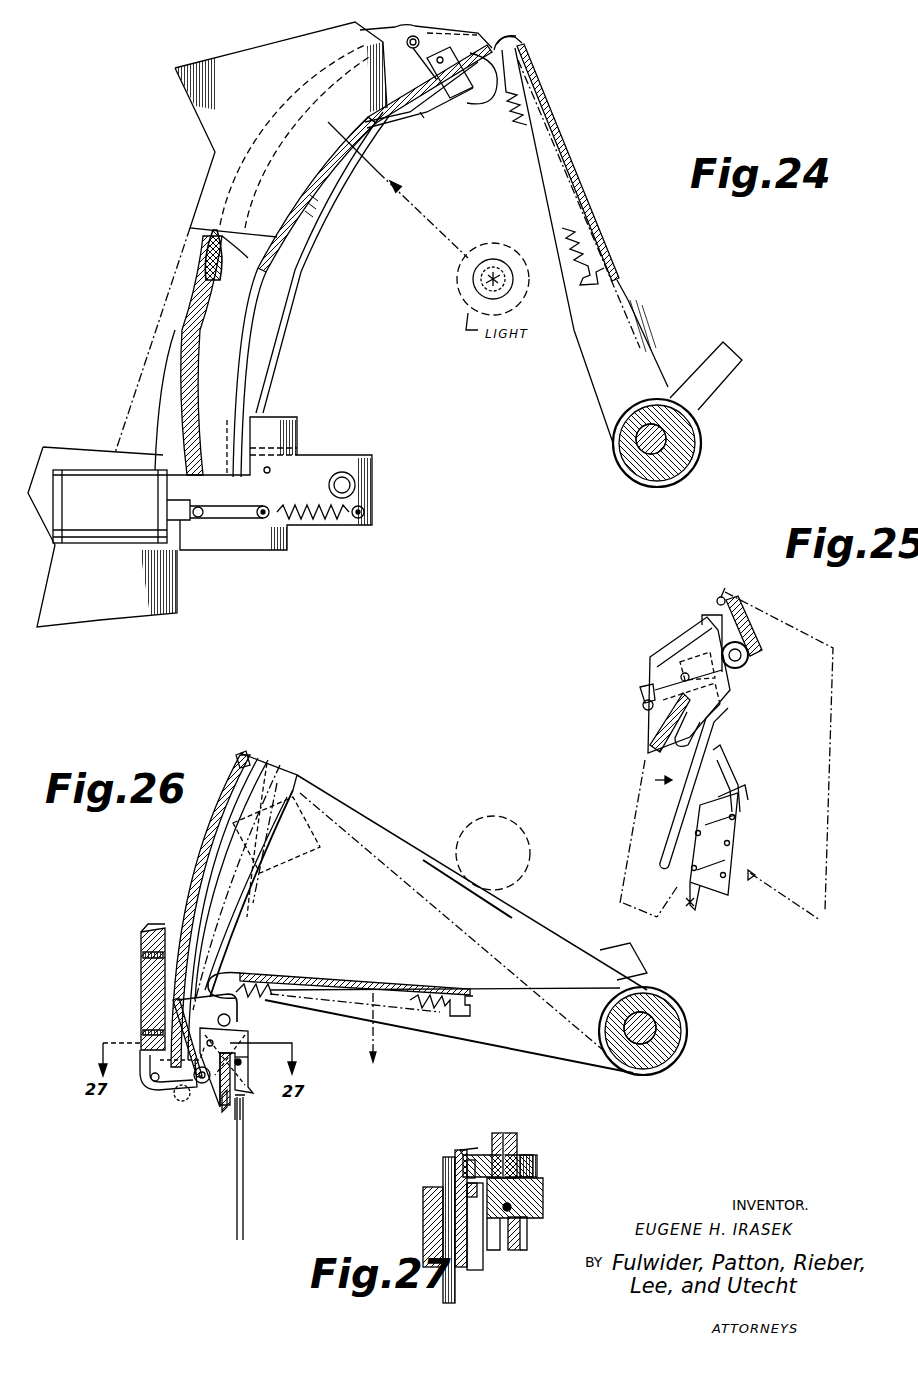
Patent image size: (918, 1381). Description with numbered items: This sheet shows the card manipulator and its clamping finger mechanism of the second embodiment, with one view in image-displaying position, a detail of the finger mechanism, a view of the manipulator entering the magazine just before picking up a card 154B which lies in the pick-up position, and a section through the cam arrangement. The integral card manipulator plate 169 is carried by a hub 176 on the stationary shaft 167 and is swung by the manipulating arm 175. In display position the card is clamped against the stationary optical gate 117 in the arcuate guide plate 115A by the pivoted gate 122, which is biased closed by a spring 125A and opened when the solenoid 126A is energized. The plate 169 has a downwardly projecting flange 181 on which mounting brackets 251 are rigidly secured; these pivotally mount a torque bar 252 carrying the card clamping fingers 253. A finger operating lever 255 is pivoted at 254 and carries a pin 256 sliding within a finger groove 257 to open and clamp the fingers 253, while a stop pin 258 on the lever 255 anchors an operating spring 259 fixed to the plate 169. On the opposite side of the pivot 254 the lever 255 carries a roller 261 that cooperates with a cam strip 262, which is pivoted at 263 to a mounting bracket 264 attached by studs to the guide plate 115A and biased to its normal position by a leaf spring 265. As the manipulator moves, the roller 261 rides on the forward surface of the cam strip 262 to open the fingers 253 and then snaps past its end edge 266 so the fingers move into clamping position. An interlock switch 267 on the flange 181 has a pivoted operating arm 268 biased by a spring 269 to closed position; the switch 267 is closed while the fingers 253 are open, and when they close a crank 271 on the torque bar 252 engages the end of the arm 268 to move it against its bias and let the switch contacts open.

In FIG. 26, the guide plate 115A is at (197, 835).
In FIG. 27, the guide plate 115A is at (434, 1305).
In FIG. 24, the stationary optical gate 117 is at (360, 130).
In FIG. 24, the pivoted gate 122 is at (315, 218).
In FIG. 24, the spring 125A is at (310, 520).
In FIG. 24, the solenoid 126A is at (102, 537).
In FIG. 26, the card 154B is at (243, 1193).
In FIG. 24, the stationary shaft 167 is at (665, 442).
In FIG. 26, the stationary shaft 167 is at (648, 1012).
In FIG. 24, the card manipulator plate 169 is at (545, 112).
In FIG. 25, the card manipulator plate 169 is at (830, 748).
In FIG. 26, the card manipulator plate 169 is at (345, 795).
In FIG. 24, the manipulating arm 175 is at (730, 372).
In FIG. 26, the manipulating arm 175 is at (635, 965).
In FIG. 24, the hub 176 is at (683, 422).
In FIG. 26, the hub 176 is at (678, 1038).
In FIG. 24, the downwardly projecting flange 181 is at (512, 45).
In FIG. 25, the downwardly projecting flange 181 is at (645, 796).
In FIG. 26, the downwardly projecting flange 181 is at (230, 975).
In FIG. 27, the downwardly projecting flange 181 is at (502, 1250).
In FIG. 24, the mounting brackets 251 is at (433, 112).
In FIG. 25, the mounting brackets 251 is at (738, 706).
In FIG. 26, the mounting brackets 251 is at (242, 1036).
In FIG. 27, the mounting brackets 251 is at (543, 1195).
In FIG. 25, the torque bar 252 is at (682, 742).
In FIG. 26, the torque bar 252 is at (240, 1045).
In FIG. 27, the torque bar 252 is at (528, 1237).
In FIG. 24, the card clamping fingers 253 is at (392, 105).
In FIG. 25, the card clamping fingers 253 is at (665, 713).
In FIG. 26, the card clamping fingers 253 is at (235, 1075).
In FIG. 27, the card clamping fingers 253 is at (540, 1160).
In FIG. 24, the pivot 254 is at (445, 70).
In FIG. 25, the pivot 254 is at (680, 675).
In FIG. 26, the pivot 254 is at (185, 1085).
In FIG. 27, the pivot 254 is at (505, 1133).
In FIG. 24, the finger operating lever 255 is at (375, 40).
In FIG. 25, the finger operating lever 255 is at (688, 630).
In FIG. 27, the finger operating lever 255 is at (463, 1150).
In FIG. 25, the pin 256 is at (745, 668).
In FIG. 24, the finger groove 257 is at (490, 106).
In FIG. 25, the finger groove 257 is at (750, 665).
In FIG. 26, the finger groove 257 is at (235, 1017).
In FIG. 25, the stop pin 258 is at (728, 592).
In FIG. 24, the operating spring 259 is at (523, 126).
In FIG. 25, the operating spring 259 is at (748, 640).
In FIG. 26, the operating spring 259 is at (445, 995).
In FIG. 25, the roller 261 is at (640, 698).
In FIG. 26, the roller 261 is at (205, 1085).
In FIG. 27, the roller 261 is at (470, 1168).
In FIG. 24, the cam strip 262 is at (198, 358).
In FIG. 26, the cam strip 262 is at (185, 878).
In FIG. 27, the cam strip 262 is at (470, 1272).
In FIG. 26, the pivot 263 is at (167, 1090).
In FIG. 27, the pivot 263 is at (425, 1190).
In FIG. 26, the mounting bracket 264 is at (145, 978).
In FIG. 27, the mounting bracket 264 is at (423, 1220).
In FIG. 24, the leaf spring 265 is at (220, 256).
In FIG. 26, the leaf spring 265 is at (245, 758).
In FIG. 26, the end edge 266 is at (193, 1090).
In FIG. 25, the interlock switch 267 is at (722, 832).
In FIG. 25, the operating arm 268 is at (722, 780).
In FIG. 25, the spring 269 is at (740, 798).
In FIG. 25, the crank 271 is at (718, 725).